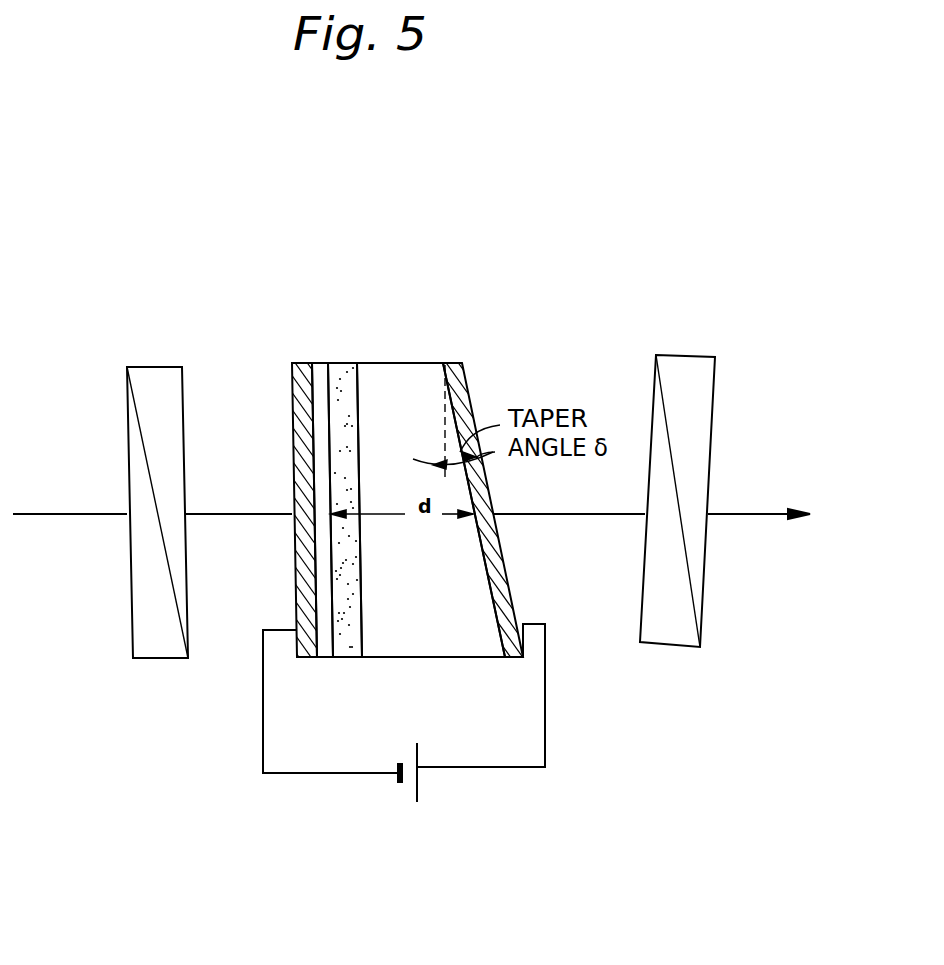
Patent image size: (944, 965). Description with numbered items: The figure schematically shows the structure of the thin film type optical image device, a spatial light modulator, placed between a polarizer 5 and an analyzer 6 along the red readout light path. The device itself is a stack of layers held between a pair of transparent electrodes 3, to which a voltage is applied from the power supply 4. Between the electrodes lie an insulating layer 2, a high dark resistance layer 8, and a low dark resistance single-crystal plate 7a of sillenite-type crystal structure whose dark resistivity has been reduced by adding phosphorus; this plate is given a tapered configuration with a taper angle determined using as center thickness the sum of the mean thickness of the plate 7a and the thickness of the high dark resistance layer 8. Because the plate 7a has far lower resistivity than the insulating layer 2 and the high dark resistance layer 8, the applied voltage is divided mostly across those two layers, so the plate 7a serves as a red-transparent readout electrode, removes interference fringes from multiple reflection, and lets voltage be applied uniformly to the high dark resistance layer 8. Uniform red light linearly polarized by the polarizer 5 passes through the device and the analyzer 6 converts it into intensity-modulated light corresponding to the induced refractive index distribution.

The insulating layer 2 is at (319, 364).
The high dark resistance layer 8 is at (347, 364).
The low dark resistance single-crystal plate 7a is at (400, 368).
The transparent electrode 3 is at (300, 362).
The polarizer 5 is at (145, 370).
The analyzer 6 is at (674, 357).
The power supply 4 is at (442, 732).